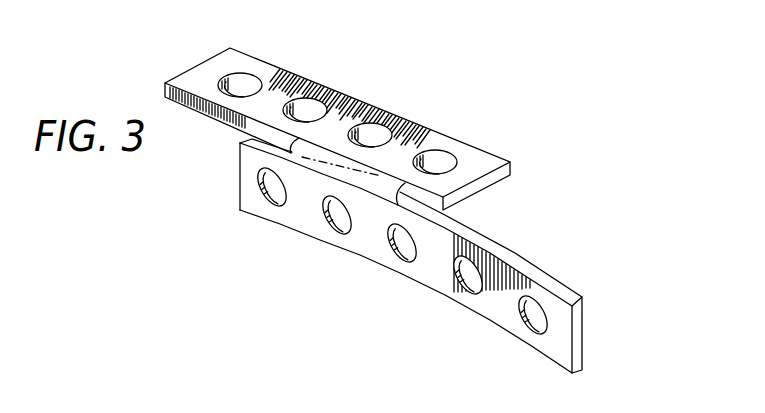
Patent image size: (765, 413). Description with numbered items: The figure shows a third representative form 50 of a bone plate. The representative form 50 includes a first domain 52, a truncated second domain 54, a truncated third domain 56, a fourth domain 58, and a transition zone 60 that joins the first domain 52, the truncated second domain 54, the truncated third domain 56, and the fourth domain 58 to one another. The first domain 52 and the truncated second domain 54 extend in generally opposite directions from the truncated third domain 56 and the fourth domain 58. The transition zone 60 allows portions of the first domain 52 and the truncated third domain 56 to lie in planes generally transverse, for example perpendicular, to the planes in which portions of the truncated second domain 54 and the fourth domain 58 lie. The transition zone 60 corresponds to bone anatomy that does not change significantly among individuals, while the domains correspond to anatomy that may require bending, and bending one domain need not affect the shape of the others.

The representative form 50 is at (420, 192).
The first domain 52 is at (341, 110).
The truncated second domain 54 is at (392, 256).
The truncated third domain 56 is at (480, 145).
The fourth domain 58 is at (507, 305).
The transition zone 60 is at (316, 188).